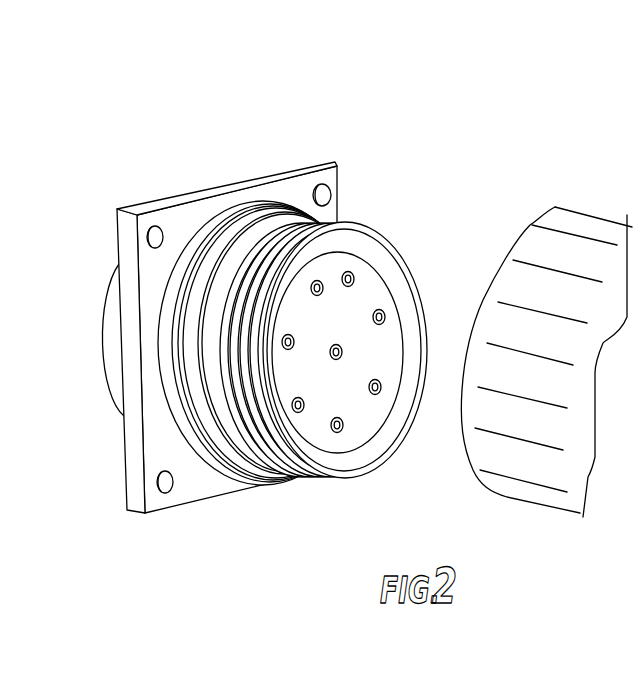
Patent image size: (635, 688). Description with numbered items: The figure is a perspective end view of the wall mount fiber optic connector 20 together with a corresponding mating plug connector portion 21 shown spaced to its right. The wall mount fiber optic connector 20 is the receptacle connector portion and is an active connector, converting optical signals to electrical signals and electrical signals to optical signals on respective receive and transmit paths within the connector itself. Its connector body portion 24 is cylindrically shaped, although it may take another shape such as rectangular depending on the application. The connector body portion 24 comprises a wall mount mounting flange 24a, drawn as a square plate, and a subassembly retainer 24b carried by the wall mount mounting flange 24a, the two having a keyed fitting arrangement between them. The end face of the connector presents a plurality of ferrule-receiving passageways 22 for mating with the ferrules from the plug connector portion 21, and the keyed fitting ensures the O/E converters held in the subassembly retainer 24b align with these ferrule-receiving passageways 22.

The wall mount fiber optic connector 20 is at (216, 262).
The plug connector portion 21 is at (555, 207).
The ferrule-receiving passageways 22 is at (381, 311).
The connector body portion 24 is at (241, 302).
The wall mount mounting flange 24a is at (300, 163).
The subassembly retainer 24b is at (100, 342).